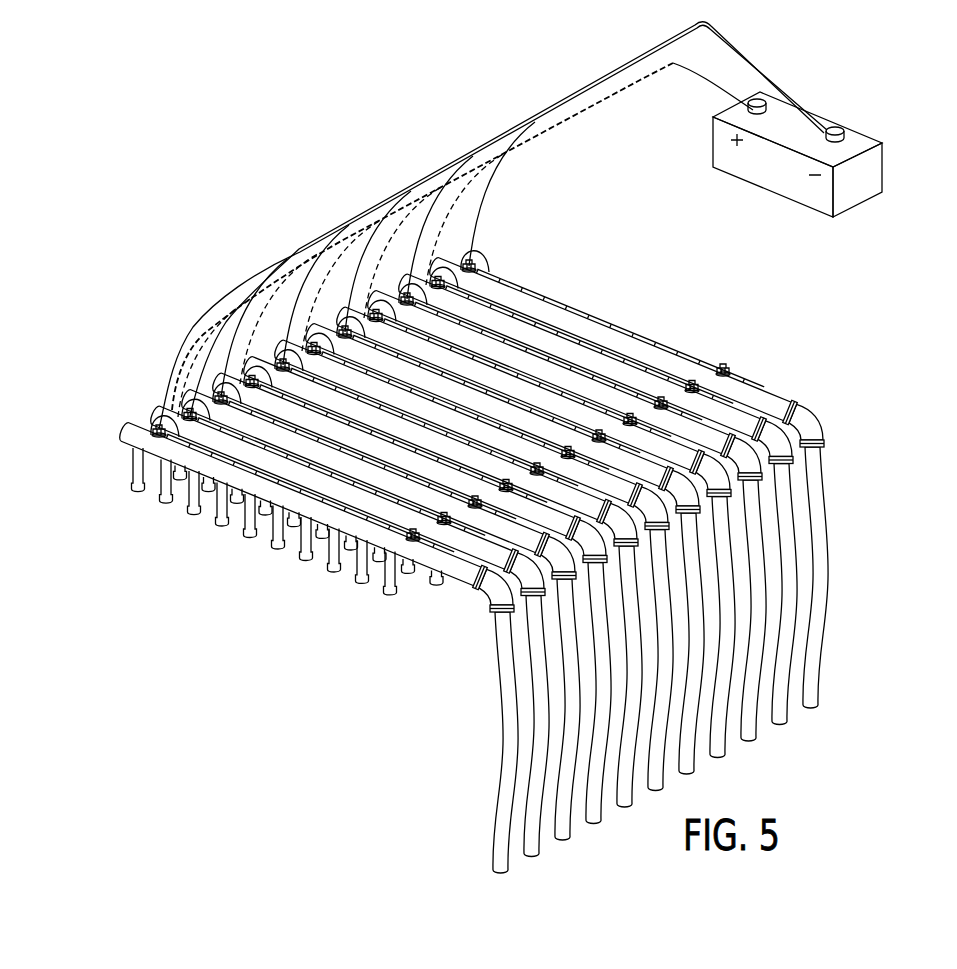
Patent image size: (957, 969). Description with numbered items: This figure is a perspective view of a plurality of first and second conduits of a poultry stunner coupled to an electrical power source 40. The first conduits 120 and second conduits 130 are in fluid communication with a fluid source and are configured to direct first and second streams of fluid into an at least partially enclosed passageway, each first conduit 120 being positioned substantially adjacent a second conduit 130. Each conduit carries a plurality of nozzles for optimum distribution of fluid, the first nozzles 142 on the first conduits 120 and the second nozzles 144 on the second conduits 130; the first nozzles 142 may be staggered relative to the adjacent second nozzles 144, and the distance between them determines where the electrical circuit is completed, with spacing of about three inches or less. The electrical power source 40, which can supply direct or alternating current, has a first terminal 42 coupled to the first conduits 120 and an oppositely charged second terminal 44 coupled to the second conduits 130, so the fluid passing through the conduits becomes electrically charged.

The electrical power source 40 is at (892, 96).
The first terminal 42 is at (760, 115).
The second terminal 44 is at (836, 146).
The first conduit 120 is at (460, 576).
The second conduit 130 is at (225, 440).
The first nozzle 142 is at (252, 538).
The second nozzle 144 is at (352, 551).